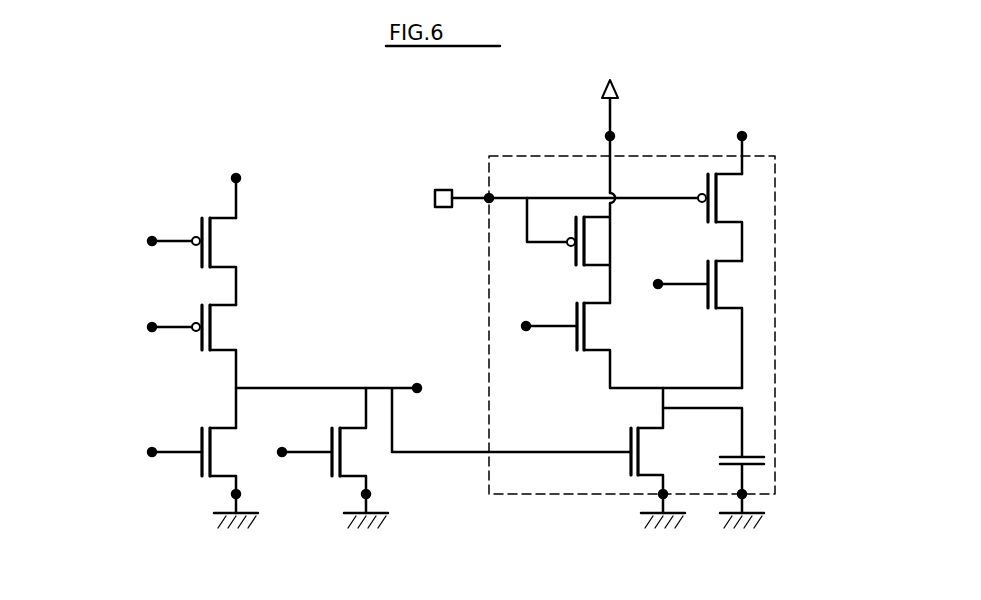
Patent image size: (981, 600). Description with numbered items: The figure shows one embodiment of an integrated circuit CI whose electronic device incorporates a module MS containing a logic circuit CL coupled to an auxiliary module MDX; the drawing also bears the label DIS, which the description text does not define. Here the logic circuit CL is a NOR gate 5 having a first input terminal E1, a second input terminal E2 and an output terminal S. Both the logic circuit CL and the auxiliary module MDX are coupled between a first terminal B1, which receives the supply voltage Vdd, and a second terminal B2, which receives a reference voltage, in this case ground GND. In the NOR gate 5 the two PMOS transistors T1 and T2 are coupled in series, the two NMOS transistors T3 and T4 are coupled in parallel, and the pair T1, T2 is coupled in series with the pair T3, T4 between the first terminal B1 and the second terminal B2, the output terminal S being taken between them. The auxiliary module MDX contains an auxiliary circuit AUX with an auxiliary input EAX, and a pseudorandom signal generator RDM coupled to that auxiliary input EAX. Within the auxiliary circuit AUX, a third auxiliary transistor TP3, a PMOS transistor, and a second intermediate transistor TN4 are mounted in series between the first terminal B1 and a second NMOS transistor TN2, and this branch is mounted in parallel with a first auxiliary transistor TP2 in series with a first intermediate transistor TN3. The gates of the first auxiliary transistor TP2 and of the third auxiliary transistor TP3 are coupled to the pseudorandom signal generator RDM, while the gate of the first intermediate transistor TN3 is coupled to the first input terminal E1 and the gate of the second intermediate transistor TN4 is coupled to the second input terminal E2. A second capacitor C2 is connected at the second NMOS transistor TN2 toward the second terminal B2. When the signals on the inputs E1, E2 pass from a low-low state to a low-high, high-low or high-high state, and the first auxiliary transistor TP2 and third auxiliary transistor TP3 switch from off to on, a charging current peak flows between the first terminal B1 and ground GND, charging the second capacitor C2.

The display device DIS is at (137, 112).
The module MS is at (111, 140).
The integrated circuit CI is at (84, 170).
The logic circuit CL is at (189, 177).
The NOR gate 5 is at (226, 158).
The first terminal B1 is at (236, 178).
The first input terminal E1 is at (152, 241).
The second input terminal E2 is at (152, 327).
The PMOS transistor T1 is at (233, 247).
The PMOS transistor T2 is at (233, 333).
The NMOS transistor T3 is at (233, 465).
The NMOS transistor T4 is at (363, 465).
The output terminal S is at (417, 388).
The second terminal B2 is at (236, 494).
The ground GND is at (224, 538).
The supply voltage Vdd is at (619, 88).
The auxiliary module MDX is at (534, 138).
The auxiliary input EAX is at (489, 198).
The pseudorandom signal generator RDM is at (443, 207).
The first auxiliary transistor TP2 is at (615, 245).
The third auxiliary transistor TP3 is at (747, 202).
The first intermediate transistor TN3 is at (615, 332).
The second intermediate transistor TN4 is at (747, 288).
The second NMOS transistor TN2 is at (625, 445).
The auxiliary circuit AUX is at (775, 326).
The second capacitor C2 is at (772, 459).